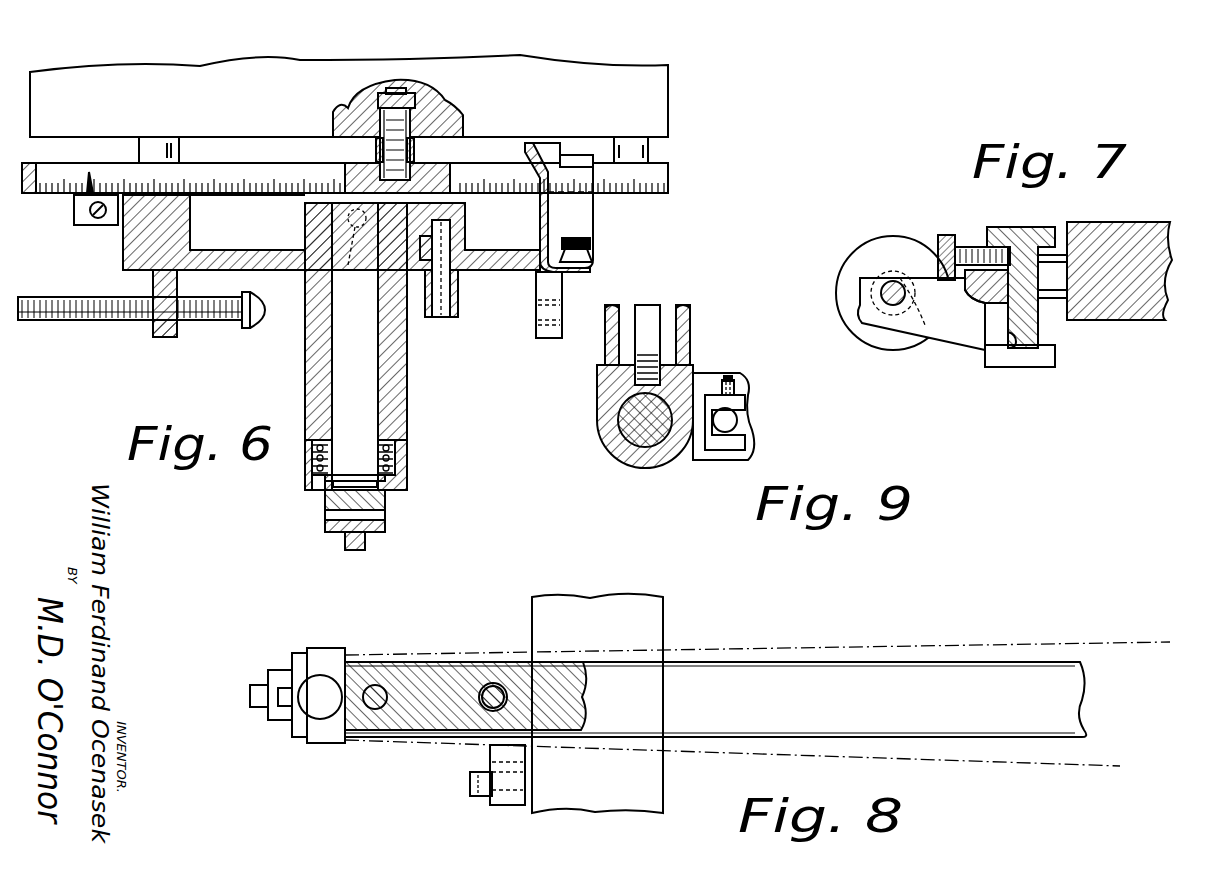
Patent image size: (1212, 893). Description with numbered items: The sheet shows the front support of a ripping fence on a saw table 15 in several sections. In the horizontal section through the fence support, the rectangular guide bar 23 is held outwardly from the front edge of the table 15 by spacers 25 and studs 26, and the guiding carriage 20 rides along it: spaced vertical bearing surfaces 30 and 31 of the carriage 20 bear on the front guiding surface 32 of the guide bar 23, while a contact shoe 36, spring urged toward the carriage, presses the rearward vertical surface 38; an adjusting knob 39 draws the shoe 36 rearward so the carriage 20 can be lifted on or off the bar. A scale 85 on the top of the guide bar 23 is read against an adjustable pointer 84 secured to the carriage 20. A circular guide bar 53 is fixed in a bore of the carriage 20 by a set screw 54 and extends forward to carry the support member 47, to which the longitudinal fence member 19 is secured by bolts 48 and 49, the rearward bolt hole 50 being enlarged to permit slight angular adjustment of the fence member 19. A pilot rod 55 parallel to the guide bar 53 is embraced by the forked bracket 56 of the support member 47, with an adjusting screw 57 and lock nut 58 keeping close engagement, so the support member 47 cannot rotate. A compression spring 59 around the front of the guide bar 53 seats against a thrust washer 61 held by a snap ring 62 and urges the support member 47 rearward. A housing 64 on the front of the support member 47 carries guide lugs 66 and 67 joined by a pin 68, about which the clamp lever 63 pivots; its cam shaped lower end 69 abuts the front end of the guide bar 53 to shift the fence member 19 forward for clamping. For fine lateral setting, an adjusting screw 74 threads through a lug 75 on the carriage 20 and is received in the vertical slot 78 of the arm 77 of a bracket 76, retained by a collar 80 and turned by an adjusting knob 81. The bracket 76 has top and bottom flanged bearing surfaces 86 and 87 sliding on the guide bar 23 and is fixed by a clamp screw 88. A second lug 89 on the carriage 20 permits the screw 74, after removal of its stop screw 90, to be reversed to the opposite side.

In FIG. 6, the table 15 is at (650, 72).
In FIG. 7, the table 15 is at (1140, 255).
In FIG. 8, the longitudinal fence member 19 is at (1068, 695).
In FIG. 9, the longitudinal fence member 19 is at (692, 320).
In FIG. 6, the guiding carriage 20 is at (275, 262).
In FIG. 8, the guiding carriage 20 is at (560, 812).
In FIG. 9, the guiding carriage 20 is at (752, 450).
In FIG. 6, the guide bar 23 is at (245, 158).
In FIG. 7, the guide bar 23 is at (1030, 348).
In FIG. 6, the spacers 25 is at (418, 150).
In FIG. 7, the spacers 25 is at (1052, 298).
In FIG. 6, the studs 26 is at (350, 145).
In FIG. 6, the vertical bearing surface 30 is at (530, 192).
In FIG. 6, the vertical bearing surface 31 is at (215, 205).
In FIG. 6, the front guiding surface 32 is at (258, 200).
In FIG. 6, the contact shoe 36 is at (570, 158).
In FIG. 6, the rearward vertical surface 38 is at (103, 160).
In FIG. 6, the adjusting knob 39 is at (592, 245).
In FIG. 6, the support member 47 is at (305, 395).
In FIG. 8, the support member 47 is at (385, 745).
In FIG. 9, the support member 47 is at (612, 445).
In FIG. 8, the bolt 48 is at (385, 690).
In FIG. 8, the bolt 49 is at (493, 683).
In FIG. 9, the bolt 49 is at (648, 330).
In FIG. 8, the rearward bolt hole 50 is at (490, 705).
In FIG. 6, the circular guide bar 53 is at (367, 352).
In FIG. 9, the circular guide bar 53 is at (635, 420).
In FIG. 6, the set screw 54 is at (353, 249).
In FIG. 6, the pilot rod 55 is at (455, 290).
In FIG. 8, the pilot rod 55 is at (470, 785).
In FIG. 9, the pilot rod 55 is at (735, 425).
In FIG. 6, the bracket 56 is at (416, 300).
In FIG. 8, the bracket 56 is at (500, 800).
In FIG. 9, the bracket 56 is at (705, 450).
In FIG. 9, the adjusting screw 57 is at (725, 380).
In FIG. 9, the lock nut 58 is at (735, 388).
In FIG. 6, the compression spring 59 is at (312, 447).
In FIG. 6, the thrust washer 61 is at (325, 478).
In FIG. 6, the snap ring 62 is at (330, 487).
In FIG. 8, the clamp lever 63 is at (315, 685).
In FIG. 6, the housing 64 is at (325, 500).
In FIG. 8, the housing 64 is at (315, 735).
In FIG. 6, the guide lug 66 is at (332, 532).
In FIG. 8, the guide lug 66 is at (280, 672).
In FIG. 6, the guide lug 67 is at (385, 530).
In FIG. 8, the guide lug 67 is at (275, 712).
In FIG. 6, the pin 68 is at (385, 515).
In FIG. 6, the cam shaped lower end 69 is at (355, 550).
In FIG. 8, the cam shaped lower end 69 is at (250, 692).
In FIG. 6, the adjusting screw 74 is at (60, 320).
In FIG. 7, the adjusting screw 74 is at (890, 310).
In FIG. 6, the lug 75 is at (166, 338).
In FIG. 7, the bracket 76 is at (995, 330).
In FIG. 7, the arm 77 is at (950, 330).
In FIG. 7, the vertical slot 78 is at (922, 260).
In FIG. 7, the collar 80 is at (890, 278).
In FIG. 7, the adjusting knob 81 is at (947, 235).
In FIG. 6, the adjustable pointer 84 is at (80, 190).
In FIG. 6, the scale 85 is at (57, 178).
In FIG. 7, the top flanged bearing surface 86 is at (1025, 255).
In FIG. 7, the bottom flanged bearing surface 87 is at (1010, 340).
In FIG. 7, the clamp screw 88 is at (965, 245).
In FIG. 6, the second lug 89 is at (550, 282).
In FIG. 6, the stop screw 90 is at (250, 330).